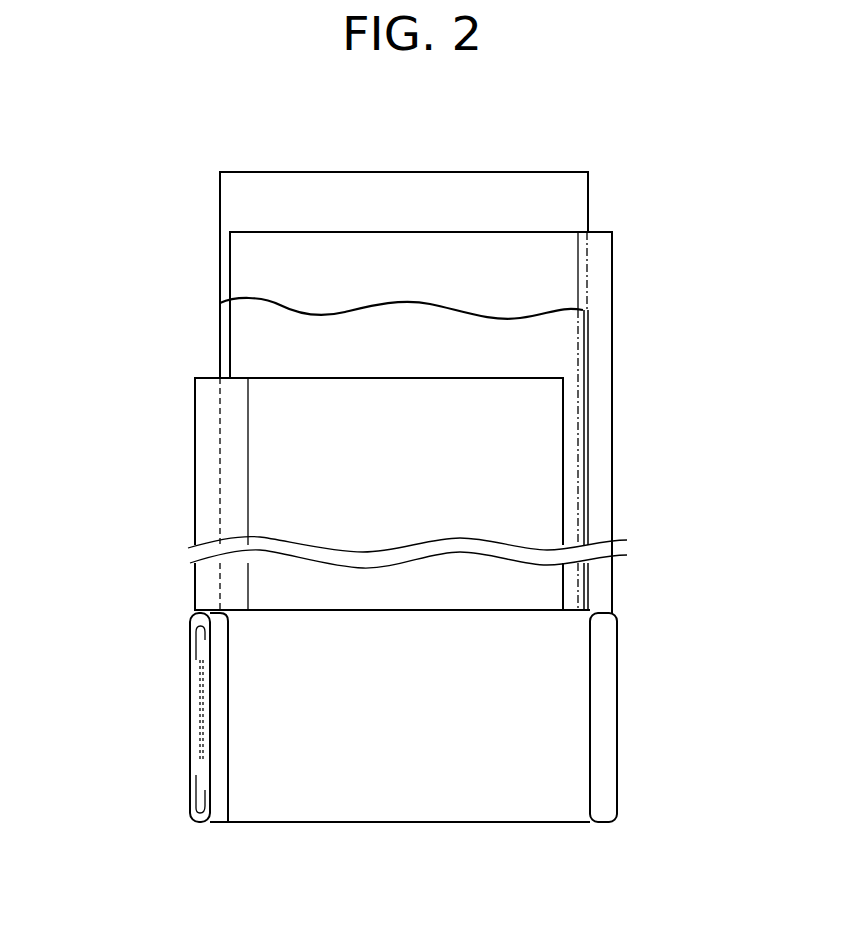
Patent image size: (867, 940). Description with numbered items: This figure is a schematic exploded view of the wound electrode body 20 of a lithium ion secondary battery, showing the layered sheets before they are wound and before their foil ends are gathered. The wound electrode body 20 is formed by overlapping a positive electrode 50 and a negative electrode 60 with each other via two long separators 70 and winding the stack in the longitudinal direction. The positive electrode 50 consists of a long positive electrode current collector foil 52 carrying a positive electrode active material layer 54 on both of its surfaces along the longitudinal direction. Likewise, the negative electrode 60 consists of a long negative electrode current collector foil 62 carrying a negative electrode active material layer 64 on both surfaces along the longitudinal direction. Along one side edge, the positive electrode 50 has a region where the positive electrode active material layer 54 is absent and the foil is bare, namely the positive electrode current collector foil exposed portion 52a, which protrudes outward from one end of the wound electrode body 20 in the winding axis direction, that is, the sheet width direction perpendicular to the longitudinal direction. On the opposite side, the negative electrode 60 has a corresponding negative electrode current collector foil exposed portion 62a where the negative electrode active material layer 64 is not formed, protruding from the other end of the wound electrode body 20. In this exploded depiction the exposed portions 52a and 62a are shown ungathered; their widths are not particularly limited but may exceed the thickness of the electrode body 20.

The wound electrode body 20 is at (470, 798).
The positive electrode 50 is at (338, 600).
The positive electrode current collector foil 52 is at (195, 532).
The positive electrode current collector foil exposed portion 52a is at (216, 705).
The positive electrode active material layer 54 is at (260, 400).
The negative electrode 60 is at (481, 522).
The negative electrode current collector foil 62 is at (612, 430).
The negative electrode current collector foil exposed portion 62a is at (597, 397).
The negative electrode active material layer 64 is at (572, 262).
The separator 70 is at (240, 200).